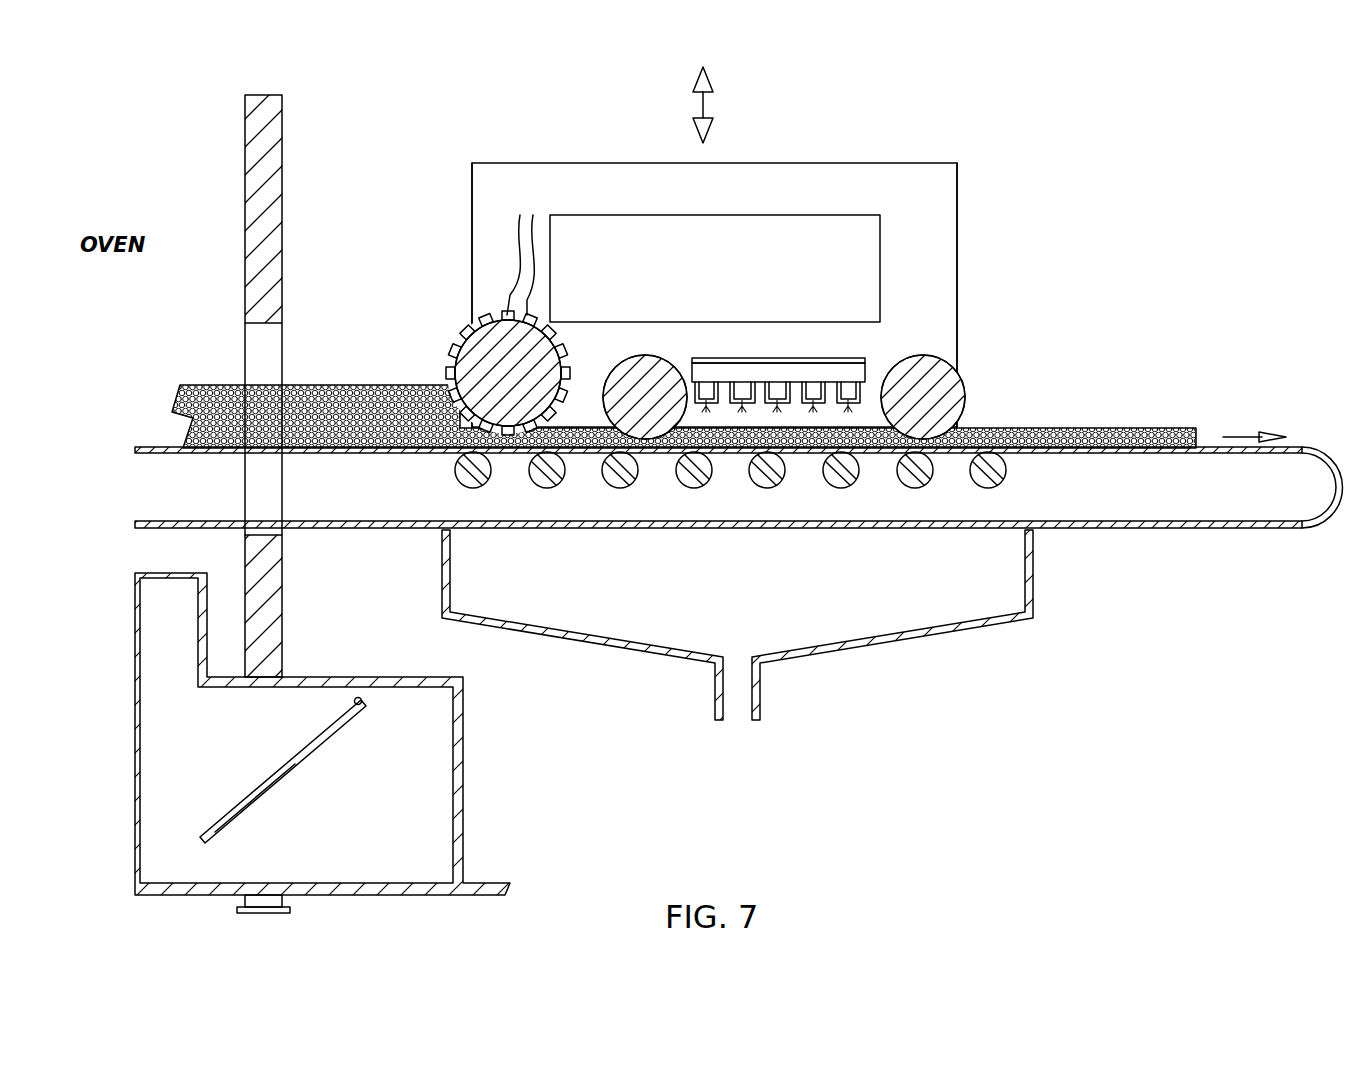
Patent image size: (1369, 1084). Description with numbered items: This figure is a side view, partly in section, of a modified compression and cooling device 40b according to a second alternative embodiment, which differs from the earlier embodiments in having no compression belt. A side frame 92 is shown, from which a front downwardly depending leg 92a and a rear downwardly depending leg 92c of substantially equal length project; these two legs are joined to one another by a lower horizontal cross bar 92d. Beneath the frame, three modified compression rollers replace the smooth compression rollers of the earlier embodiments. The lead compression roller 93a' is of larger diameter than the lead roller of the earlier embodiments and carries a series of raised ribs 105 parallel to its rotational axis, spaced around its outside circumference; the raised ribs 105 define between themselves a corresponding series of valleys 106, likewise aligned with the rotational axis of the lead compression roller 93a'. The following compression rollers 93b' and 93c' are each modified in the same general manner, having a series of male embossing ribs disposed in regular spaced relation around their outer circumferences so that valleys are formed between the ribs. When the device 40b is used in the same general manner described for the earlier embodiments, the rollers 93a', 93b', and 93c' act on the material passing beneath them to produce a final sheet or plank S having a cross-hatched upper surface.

The modified compression and cooling device 40b is at (1220, 166).
The side frame 92 is at (847, 177).
The front downwardly depending leg 92a is at (500, 260).
The rear downwardly depending leg 92c is at (958, 257).
The lower horizontal cross bar 92d is at (730, 327).
The lead compression roller 93a' is at (442, 404).
The compression roller 93b' is at (643, 344).
The compression roller 93c' is at (981, 397).
The raised ribs 105 is at (442, 367).
The valleys 106 is at (529, 246).
The sheet or plank S is at (1120, 435).